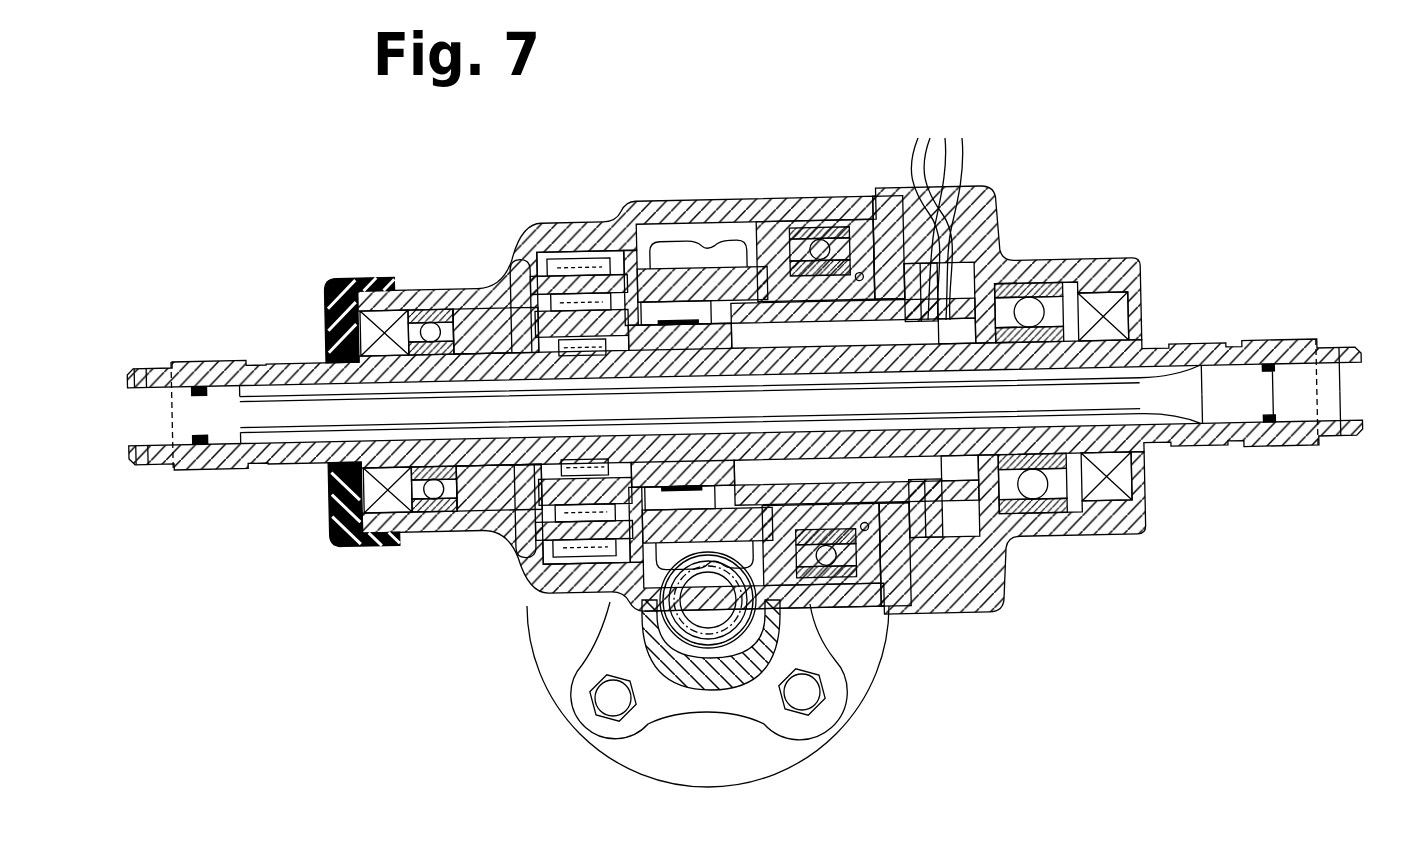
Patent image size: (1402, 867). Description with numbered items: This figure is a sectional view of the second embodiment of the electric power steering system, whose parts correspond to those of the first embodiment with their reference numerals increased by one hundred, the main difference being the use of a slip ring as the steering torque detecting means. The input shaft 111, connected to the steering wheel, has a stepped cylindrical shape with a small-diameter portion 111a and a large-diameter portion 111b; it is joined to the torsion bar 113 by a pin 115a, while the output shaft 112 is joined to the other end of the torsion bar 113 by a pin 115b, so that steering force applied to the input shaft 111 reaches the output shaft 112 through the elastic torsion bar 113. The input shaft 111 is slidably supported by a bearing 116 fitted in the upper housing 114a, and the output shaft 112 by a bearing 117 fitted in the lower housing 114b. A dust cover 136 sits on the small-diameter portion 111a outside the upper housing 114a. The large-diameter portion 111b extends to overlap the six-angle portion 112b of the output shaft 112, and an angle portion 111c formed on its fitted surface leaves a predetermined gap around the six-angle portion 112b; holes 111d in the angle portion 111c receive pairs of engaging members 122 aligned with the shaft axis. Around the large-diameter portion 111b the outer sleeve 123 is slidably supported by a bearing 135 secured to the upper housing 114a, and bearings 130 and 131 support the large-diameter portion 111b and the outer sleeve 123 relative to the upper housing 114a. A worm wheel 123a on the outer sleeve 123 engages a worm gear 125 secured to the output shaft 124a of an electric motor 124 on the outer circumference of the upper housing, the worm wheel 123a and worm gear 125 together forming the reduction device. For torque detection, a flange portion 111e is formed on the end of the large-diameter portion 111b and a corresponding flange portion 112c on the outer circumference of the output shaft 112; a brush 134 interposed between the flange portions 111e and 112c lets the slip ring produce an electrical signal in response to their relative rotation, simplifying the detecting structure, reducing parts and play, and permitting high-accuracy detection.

The input shaft 111 is at (313, 452).
The small-diameter portion 111a is at (480, 360).
The large-diameter portion 111b is at (795, 607).
The angle portion 111c is at (688, 312).
The holes 111d is at (650, 300).
The flange portion 111e is at (912, 545).
The output shaft 112 is at (1187, 350).
The six-angle portion 112b is at (636, 466).
The flange portion 112c is at (985, 548).
The torsion bar 113 is at (1147, 398).
The upper housing 114a is at (540, 563).
The lower housing 114b is at (1033, 307).
The pin 115a is at (162, 452).
The pin 115b is at (1330, 350).
The bearing 116 is at (432, 505).
The bearing 117 is at (1092, 275).
The engaging members 122 is at (675, 292).
The outer sleeve 123 is at (780, 230).
The worm wheel 123a is at (773, 277).
The electric motor 124 is at (850, 655).
The output shaft of electric motor 124a is at (723, 643).
The worm gear 125 is at (717, 610).
The bearing 130 is at (562, 262).
The bearing 131 is at (585, 262).
The brush 134 is at (957, 222).
The bearing 135 is at (868, 560).
The dust cover 136 is at (338, 315).